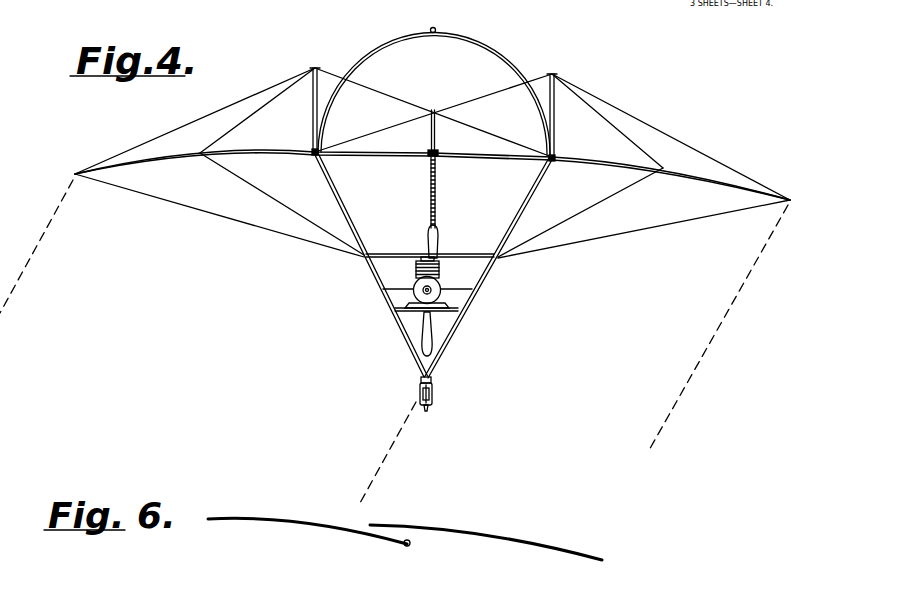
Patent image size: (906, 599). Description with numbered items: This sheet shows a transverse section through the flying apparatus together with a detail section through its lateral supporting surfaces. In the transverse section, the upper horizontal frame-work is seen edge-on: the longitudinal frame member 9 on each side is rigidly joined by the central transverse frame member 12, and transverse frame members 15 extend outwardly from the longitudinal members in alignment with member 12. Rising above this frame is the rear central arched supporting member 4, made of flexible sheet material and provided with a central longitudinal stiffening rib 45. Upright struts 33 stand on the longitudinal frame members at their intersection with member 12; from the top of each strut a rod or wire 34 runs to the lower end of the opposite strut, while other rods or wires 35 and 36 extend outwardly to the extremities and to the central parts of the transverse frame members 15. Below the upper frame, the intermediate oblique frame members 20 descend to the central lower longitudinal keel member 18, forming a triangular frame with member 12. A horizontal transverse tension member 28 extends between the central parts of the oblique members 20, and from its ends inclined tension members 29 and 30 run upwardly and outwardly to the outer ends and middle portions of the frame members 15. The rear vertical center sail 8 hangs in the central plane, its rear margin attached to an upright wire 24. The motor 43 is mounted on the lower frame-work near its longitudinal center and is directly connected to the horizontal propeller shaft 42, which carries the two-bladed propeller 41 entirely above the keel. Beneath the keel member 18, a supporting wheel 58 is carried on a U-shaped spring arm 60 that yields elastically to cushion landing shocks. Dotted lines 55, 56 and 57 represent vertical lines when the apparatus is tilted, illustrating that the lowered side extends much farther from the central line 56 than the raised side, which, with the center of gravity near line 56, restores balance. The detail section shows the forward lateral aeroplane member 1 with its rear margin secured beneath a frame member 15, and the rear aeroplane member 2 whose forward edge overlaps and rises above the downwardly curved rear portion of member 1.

In FIG. 6, the forward lateral aeroplane member 1 is at (293, 520).
In FIG. 6, the rear lateral aeroplane member 2 is at (478, 529).
In FIG. 4, the rear central arched supporting member 4 is at (481, 41).
In FIG. 4, the rear vertical center sail 8 is at (430, 177).
In FIG. 4, the longitudinal frame member 9 is at (313, 154).
In FIG. 4, the central transverse frame member 12 is at (477, 158).
In FIG. 4, the transverse frame member 15 is at (158, 161).
In FIG. 6, the transverse frame member 15 is at (409, 545).
In FIG. 4, the keel member 18 is at (433, 378).
In FIG. 4, the intermediate oblique frame member 20 is at (370, 267).
In FIG. 4, the upright wire 24 is at (449, 258).
In FIG. 4, the horizontal transverse tension member 28 is at (454, 257).
In FIG. 4, the inclined tension member 29 is at (237, 228).
In FIG. 4, the inclined tension member 30 is at (256, 192).
In FIG. 4, the upright strut 33 is at (311, 71).
In FIG. 4, the rod or wire 34 is at (473, 97).
In FIG. 4, the rod or wire 35 is at (182, 128).
In FIG. 4, the rod or wire 36 is at (267, 103).
In FIG. 4, the propeller 41 is at (438, 324).
In FIG. 4, the propeller shaft 42 is at (404, 312).
In FIG. 4, the motor 43 is at (421, 258).
In FIG. 4, the stiffening rib 45 is at (430, 28).
In FIG. 4, the dotted line 55 is at (44, 233).
In FIG. 4, the central dotted line 56 is at (400, 428).
In FIG. 4, the dotted line 57 is at (668, 418).
In FIG. 4, the supporting wheel 58 is at (430, 409).
In FIG. 4, the U-shaped spring arm 60 is at (434, 394).